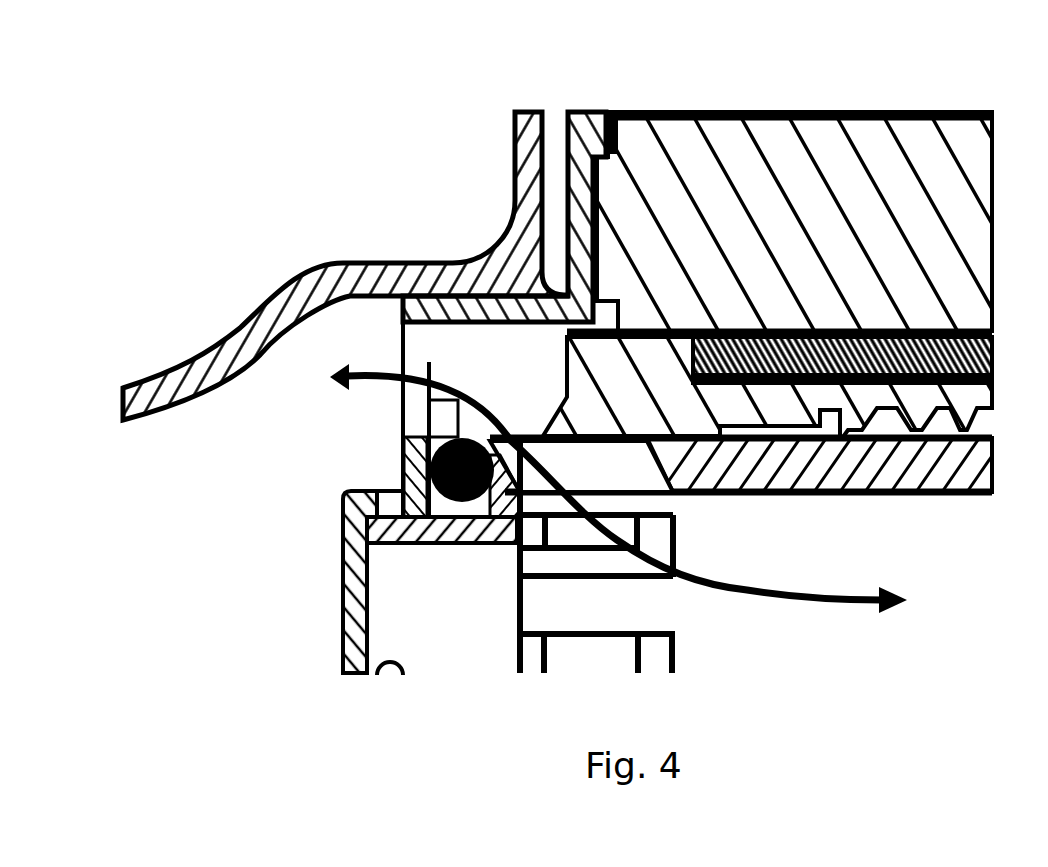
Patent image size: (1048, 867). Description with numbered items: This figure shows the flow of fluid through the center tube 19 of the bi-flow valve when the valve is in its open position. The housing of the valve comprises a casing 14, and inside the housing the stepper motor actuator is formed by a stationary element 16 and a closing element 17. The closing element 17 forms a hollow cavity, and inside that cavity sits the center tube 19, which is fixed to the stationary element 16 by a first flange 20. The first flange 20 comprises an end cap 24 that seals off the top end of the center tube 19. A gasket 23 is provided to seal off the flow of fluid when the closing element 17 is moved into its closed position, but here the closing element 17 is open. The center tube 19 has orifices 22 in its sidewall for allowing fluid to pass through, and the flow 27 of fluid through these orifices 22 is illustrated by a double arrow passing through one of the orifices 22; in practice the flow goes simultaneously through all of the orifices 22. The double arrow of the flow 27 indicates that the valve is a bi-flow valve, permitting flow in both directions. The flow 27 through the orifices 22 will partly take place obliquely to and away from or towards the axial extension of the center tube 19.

The casing 14 is at (328, 267).
The stationary element 16 is at (876, 167).
The closing element 17 is at (640, 363).
The center tube 19 is at (843, 455).
The first flange 20 is at (580, 143).
The orifices 22 is at (595, 472).
The gasket 23 is at (400, 433).
The end cap 24 is at (337, 595).
The flow 27 is at (827, 600).